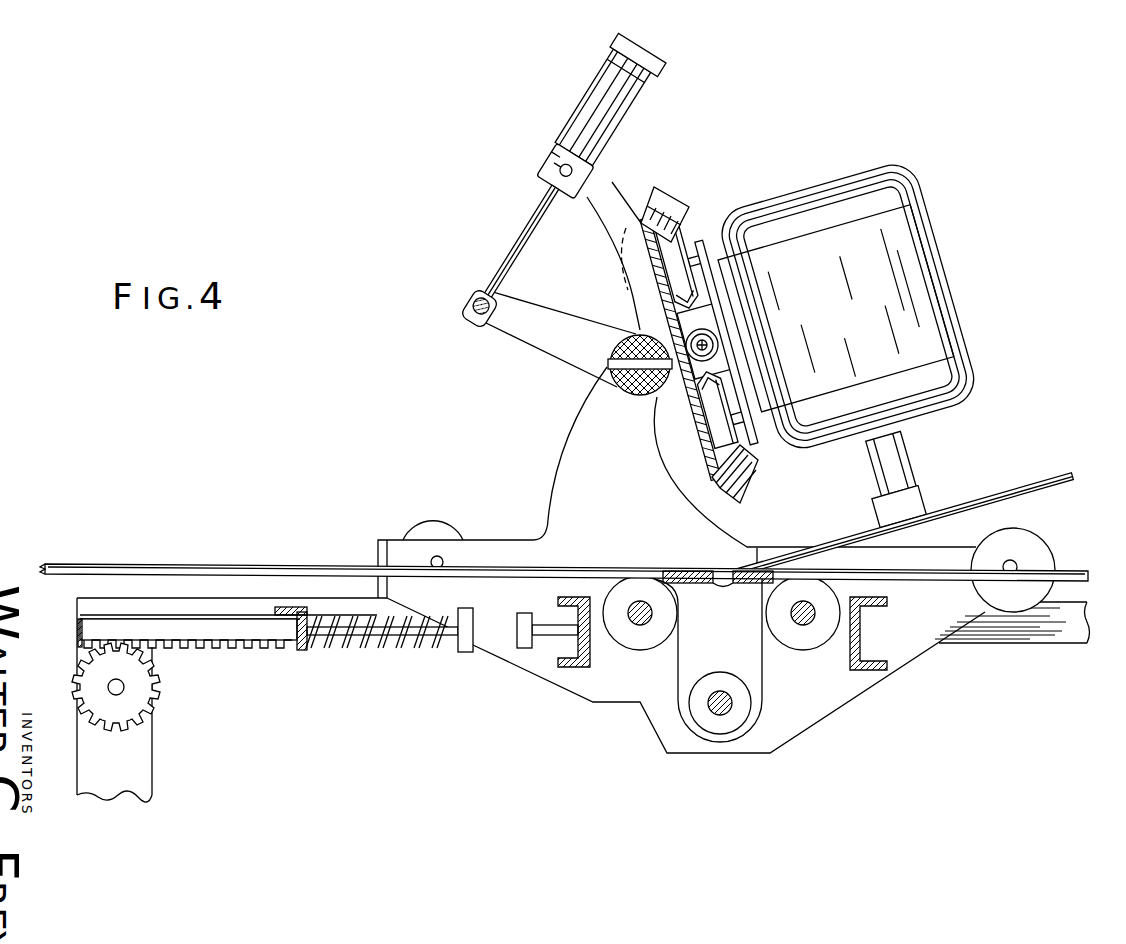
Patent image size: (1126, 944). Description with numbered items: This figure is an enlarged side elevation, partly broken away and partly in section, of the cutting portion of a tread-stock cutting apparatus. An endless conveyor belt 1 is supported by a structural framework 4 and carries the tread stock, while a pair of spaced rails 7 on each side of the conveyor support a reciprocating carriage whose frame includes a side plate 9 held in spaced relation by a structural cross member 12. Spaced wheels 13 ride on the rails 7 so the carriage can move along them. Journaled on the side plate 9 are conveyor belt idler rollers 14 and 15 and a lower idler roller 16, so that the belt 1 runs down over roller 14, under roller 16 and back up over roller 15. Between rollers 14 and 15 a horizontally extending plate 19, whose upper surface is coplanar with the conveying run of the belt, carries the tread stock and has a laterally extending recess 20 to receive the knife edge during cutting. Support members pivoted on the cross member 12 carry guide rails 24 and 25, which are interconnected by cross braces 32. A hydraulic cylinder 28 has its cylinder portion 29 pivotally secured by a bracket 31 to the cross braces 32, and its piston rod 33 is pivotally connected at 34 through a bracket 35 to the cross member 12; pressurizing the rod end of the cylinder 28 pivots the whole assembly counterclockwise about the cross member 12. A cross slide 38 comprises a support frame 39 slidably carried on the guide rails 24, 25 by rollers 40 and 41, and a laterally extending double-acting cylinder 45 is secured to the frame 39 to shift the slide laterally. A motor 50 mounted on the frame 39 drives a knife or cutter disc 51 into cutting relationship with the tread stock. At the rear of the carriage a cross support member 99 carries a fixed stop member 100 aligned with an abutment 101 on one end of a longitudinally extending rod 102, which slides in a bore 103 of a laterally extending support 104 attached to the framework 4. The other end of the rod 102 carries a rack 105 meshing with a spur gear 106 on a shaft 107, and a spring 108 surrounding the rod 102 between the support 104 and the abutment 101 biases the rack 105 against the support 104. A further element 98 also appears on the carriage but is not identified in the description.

The endless conveyor belt 1 is at (1088, 574).
The structural framework 4 is at (143, 768).
The spaced rails 7 is at (1027, 637).
The side plate 9 is at (573, 530).
The structural cross member 12 is at (630, 373).
The spaced wheels 13 is at (415, 533).
The conveyor belt idler roller 14 is at (657, 645).
The conveyor belt idler roller 15 is at (792, 642).
The idler roller 16 is at (710, 730).
The horizontally extending plate 19 is at (705, 583).
The laterally extending recess 20 is at (728, 572).
The guide rail 24 is at (670, 205).
The guide rail 25 is at (744, 480).
The hydraulic cylinder 28 is at (503, 124).
The cylinder portion 29 is at (641, 90).
The bracket 31 is at (617, 183).
The cross braces 32 is at (700, 473).
The piston rod 33 is at (526, 232).
The pivotal connection 34 is at (476, 299).
The bracket 35 is at (510, 330).
The cross slide 38 is at (786, 459).
The support frame 39 is at (722, 302).
The roller 40 is at (682, 245).
The roller 41 is at (746, 458).
The double-acting cylinder 45 is at (719, 345).
The motor 50 is at (923, 289).
The knife or cutter disc 51 is at (1030, 486).
The bracket 98 is at (877, 662).
The cross support member 99 is at (580, 665).
The stop member 100 is at (525, 648).
The abutment 101 is at (467, 608).
The longitudinally extending rod 102 is at (360, 648).
The bore 103 is at (295, 620).
The laterally extending support 104 is at (283, 618).
The rack 105 is at (187, 650).
The spur gear 106 is at (123, 712).
The shaft 107 is at (123, 691).
The spring 108 is at (455, 642).